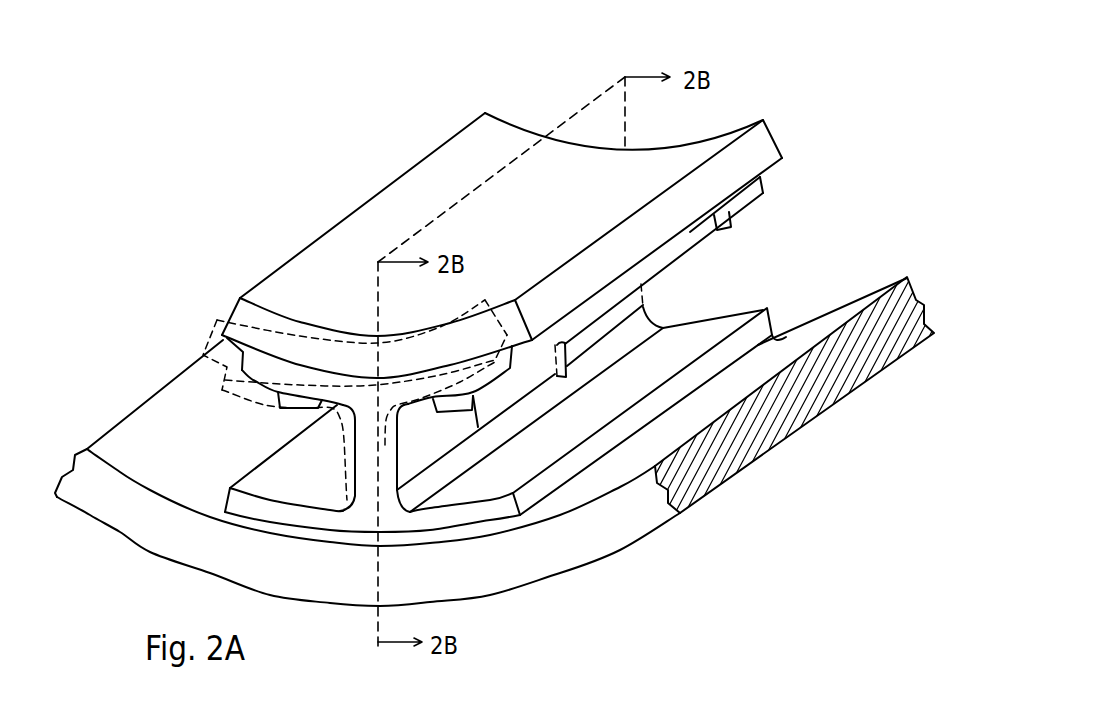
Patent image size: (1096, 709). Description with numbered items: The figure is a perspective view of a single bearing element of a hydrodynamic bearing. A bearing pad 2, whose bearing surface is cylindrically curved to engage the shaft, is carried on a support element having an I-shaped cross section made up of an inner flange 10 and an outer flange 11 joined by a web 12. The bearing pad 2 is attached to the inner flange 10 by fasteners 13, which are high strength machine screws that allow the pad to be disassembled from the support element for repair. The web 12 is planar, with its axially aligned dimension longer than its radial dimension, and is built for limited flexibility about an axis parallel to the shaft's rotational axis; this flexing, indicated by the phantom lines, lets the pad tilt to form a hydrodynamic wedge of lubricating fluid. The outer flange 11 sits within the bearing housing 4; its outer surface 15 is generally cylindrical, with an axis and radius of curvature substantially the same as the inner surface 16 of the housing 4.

The bearing pad 2 is at (333, 238).
The bearing housing 4 is at (552, 574).
The inner flange 10 is at (284, 373).
The outer flange 11 is at (438, 525).
The web 12 is at (362, 468).
The fasteners 13 is at (447, 408).
The outer surface 15 is at (783, 338).
The inner surface 16 is at (143, 420).